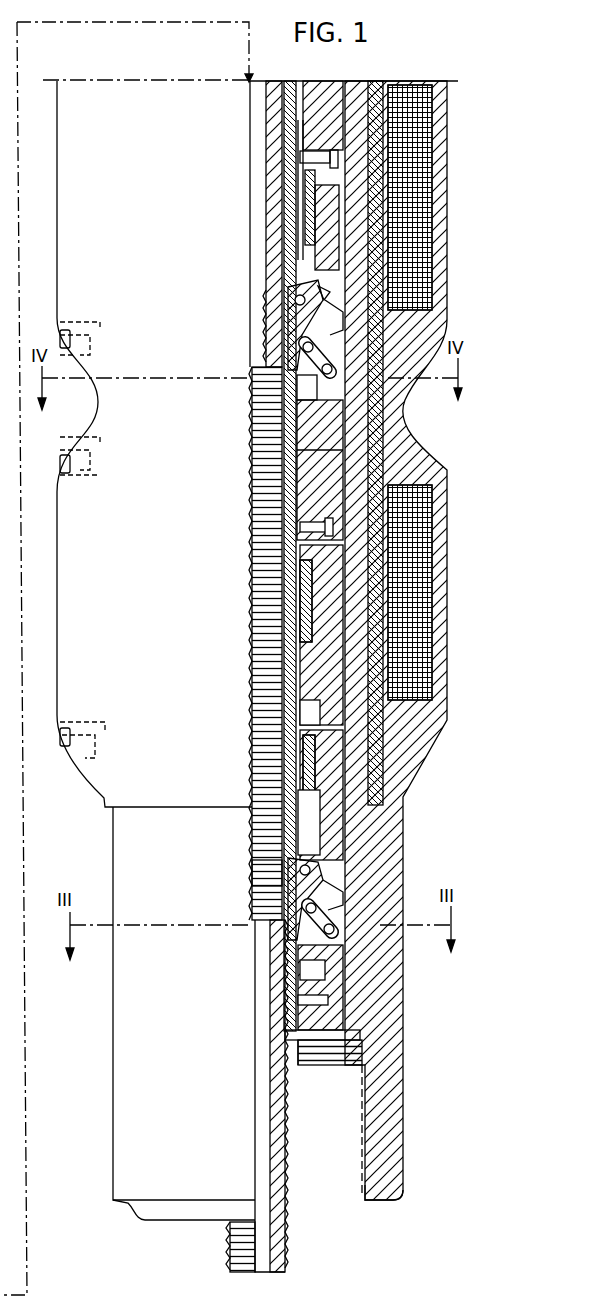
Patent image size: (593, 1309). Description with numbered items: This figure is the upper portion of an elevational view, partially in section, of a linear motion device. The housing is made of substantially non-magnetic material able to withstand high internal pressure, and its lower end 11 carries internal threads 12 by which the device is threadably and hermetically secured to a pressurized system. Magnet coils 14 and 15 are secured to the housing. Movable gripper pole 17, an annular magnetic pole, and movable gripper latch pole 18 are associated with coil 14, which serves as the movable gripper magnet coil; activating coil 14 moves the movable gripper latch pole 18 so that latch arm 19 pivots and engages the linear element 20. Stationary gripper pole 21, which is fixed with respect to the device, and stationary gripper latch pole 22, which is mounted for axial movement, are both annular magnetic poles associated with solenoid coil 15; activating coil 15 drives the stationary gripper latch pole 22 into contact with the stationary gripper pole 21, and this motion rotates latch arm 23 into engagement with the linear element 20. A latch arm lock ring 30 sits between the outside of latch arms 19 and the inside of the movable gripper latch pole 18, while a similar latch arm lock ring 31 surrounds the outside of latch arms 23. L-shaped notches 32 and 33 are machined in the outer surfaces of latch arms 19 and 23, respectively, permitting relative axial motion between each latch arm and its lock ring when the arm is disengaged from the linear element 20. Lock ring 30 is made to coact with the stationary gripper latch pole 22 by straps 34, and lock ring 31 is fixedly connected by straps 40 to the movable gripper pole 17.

The lower end of the housing 11 is at (390, 1070).
The internal threads 12 is at (372, 1207).
The movable gripper magnet coil 14 is at (410, 88).
The solenoid coil 15 is at (423, 618).
The movable gripper pole 17 is at (318, 96).
The movable gripper latch pole 18 is at (327, 262).
The latch arm 19 is at (292, 312).
The linear element 20 is at (252, 512).
The stationary gripper pole 21 is at (330, 562).
The stationary gripper latch pole 22 is at (328, 650).
The latch arm 23 is at (256, 872).
The latch arm lock ring 30 is at (329, 292).
The latch arm lock ring 31 is at (335, 936).
The notch 32 is at (330, 330).
The notch 33 is at (320, 900).
The straps 34 is at (332, 390).
The straps 40 is at (335, 921).